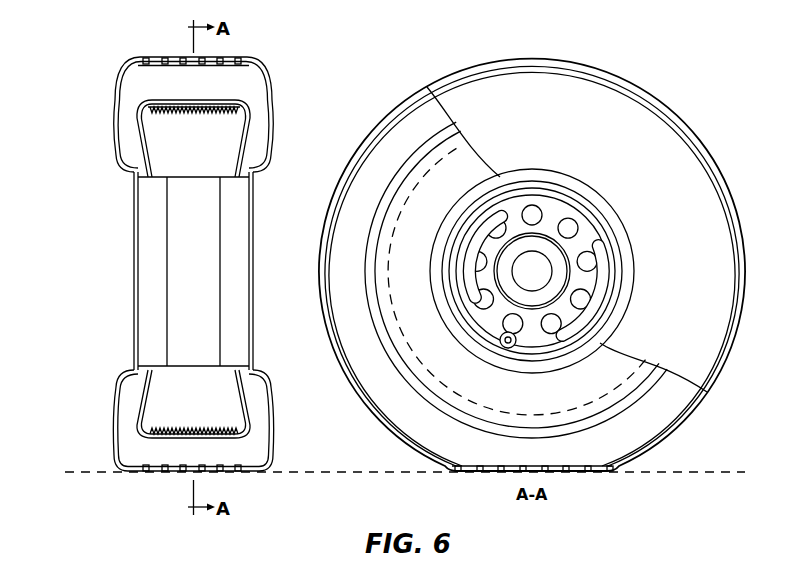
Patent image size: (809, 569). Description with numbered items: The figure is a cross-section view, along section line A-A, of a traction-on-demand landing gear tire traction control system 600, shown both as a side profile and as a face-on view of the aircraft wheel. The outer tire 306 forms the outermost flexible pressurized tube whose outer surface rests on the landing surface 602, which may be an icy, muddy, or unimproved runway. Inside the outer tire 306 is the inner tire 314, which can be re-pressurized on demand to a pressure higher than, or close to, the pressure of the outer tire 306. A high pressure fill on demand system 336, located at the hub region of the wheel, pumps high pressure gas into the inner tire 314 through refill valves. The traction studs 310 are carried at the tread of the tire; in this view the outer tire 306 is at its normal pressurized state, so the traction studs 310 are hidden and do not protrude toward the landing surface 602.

The outer tire 306 is at (120, 80).
The inner tire 314 is at (253, 144).
The traction studs 310 is at (238, 476).
The high pressure fill on demand system 336 is at (459, 271).
The traction-on-demand landing gear tire traction control system 600 is at (708, 55).
The landing surface 602 is at (741, 471).